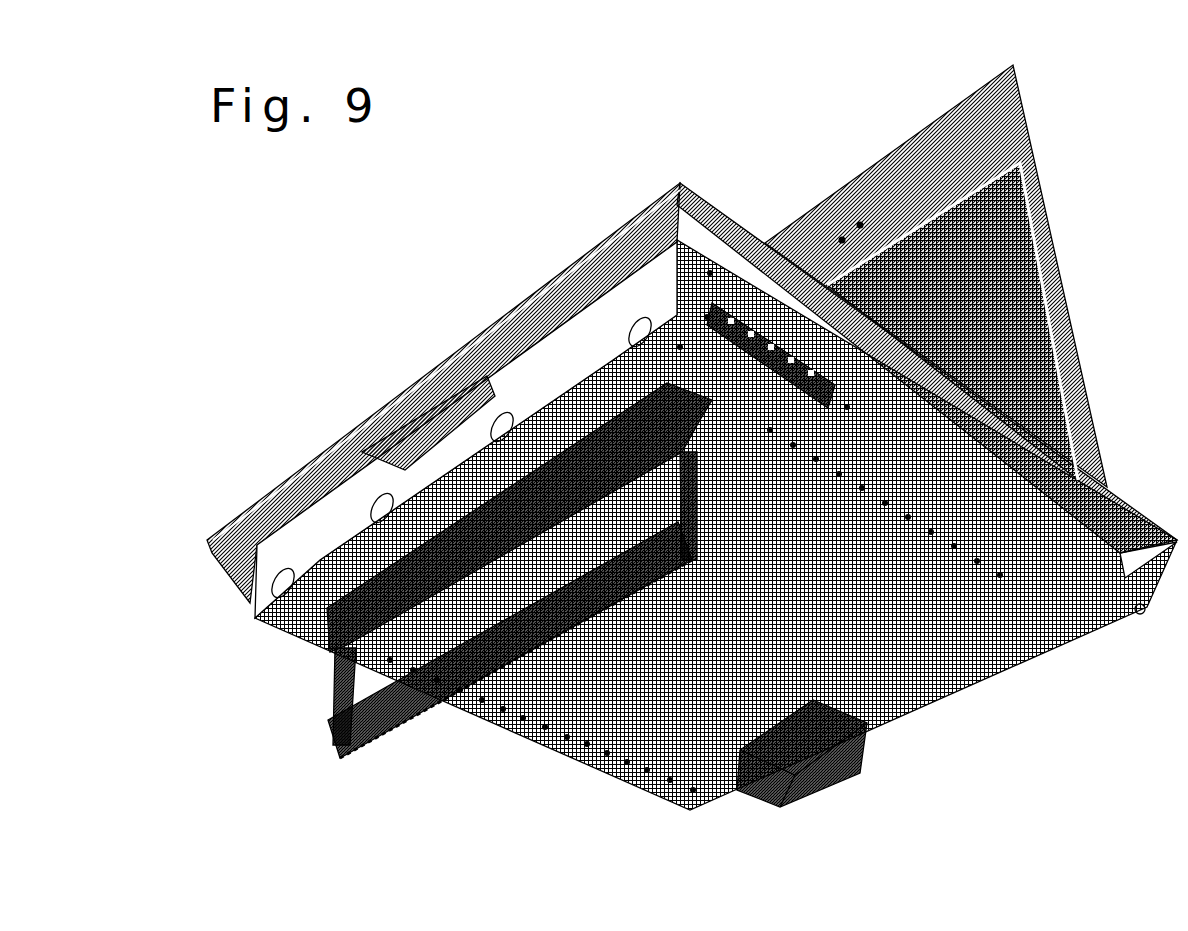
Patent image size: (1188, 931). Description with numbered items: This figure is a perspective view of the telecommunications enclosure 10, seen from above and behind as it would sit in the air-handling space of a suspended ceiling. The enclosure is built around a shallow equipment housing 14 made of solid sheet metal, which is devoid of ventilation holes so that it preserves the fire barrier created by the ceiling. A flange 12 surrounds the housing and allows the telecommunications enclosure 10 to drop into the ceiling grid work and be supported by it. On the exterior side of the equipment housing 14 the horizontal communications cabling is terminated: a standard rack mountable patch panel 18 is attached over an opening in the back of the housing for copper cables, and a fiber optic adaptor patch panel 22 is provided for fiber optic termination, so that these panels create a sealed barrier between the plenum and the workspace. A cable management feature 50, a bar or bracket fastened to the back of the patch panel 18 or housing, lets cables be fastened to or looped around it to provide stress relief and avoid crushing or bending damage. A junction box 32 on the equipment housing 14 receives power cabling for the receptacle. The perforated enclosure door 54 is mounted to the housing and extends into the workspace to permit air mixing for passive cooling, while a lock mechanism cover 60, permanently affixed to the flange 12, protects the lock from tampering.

The telecommunications enclosure 10 is at (541, 168).
The flange 12 is at (247, 507).
The equipment housing 14 is at (893, 632).
The patch panel 18 is at (323, 640).
The fiber optic adaptor patch panel 22 is at (773, 360).
The junction box 32 is at (803, 780).
The cable management feature 50 is at (403, 718).
The enclosure door 54 is at (1053, 207).
The lock mechanism cover 60 is at (413, 402).